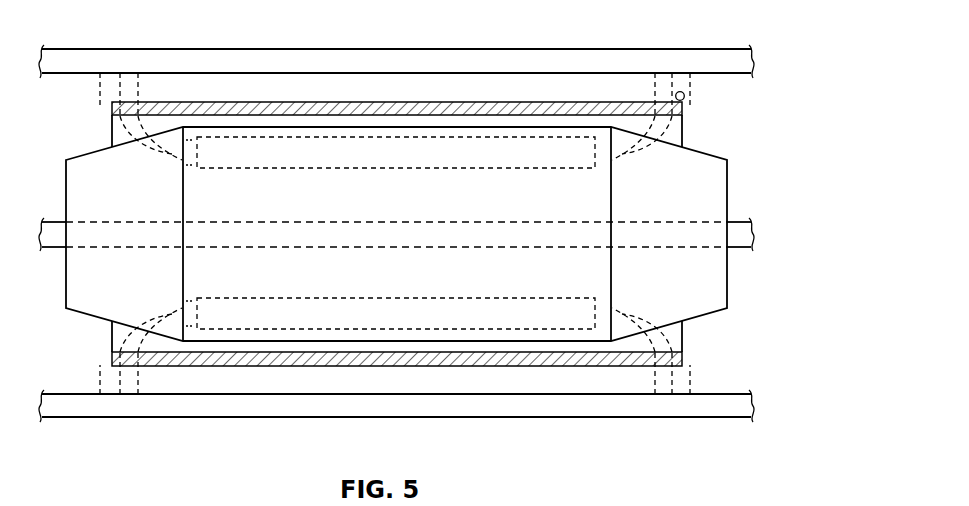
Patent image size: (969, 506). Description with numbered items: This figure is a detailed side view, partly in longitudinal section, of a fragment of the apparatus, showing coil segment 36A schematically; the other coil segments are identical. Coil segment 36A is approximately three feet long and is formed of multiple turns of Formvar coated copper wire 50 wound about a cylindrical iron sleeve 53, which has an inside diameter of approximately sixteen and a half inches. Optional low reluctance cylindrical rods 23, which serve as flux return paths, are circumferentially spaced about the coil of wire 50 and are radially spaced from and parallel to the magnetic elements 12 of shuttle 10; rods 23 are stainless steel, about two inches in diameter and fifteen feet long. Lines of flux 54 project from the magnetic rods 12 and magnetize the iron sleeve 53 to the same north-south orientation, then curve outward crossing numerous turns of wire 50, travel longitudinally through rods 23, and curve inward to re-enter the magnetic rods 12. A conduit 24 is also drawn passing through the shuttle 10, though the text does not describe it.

The shuttle 10 is at (736, 295).
The magnetic elements 12 is at (311, 175).
The low reluctance cylindrical rods 23 is at (106, 48).
The pipe / conduit 24 is at (58, 230).
The coil segment 36A is at (690, 98).
The Formvar coated copper wire 50 is at (391, 92).
The cylindrical iron sleeve 53 is at (114, 107).
The lines of flux 54 is at (692, 74).